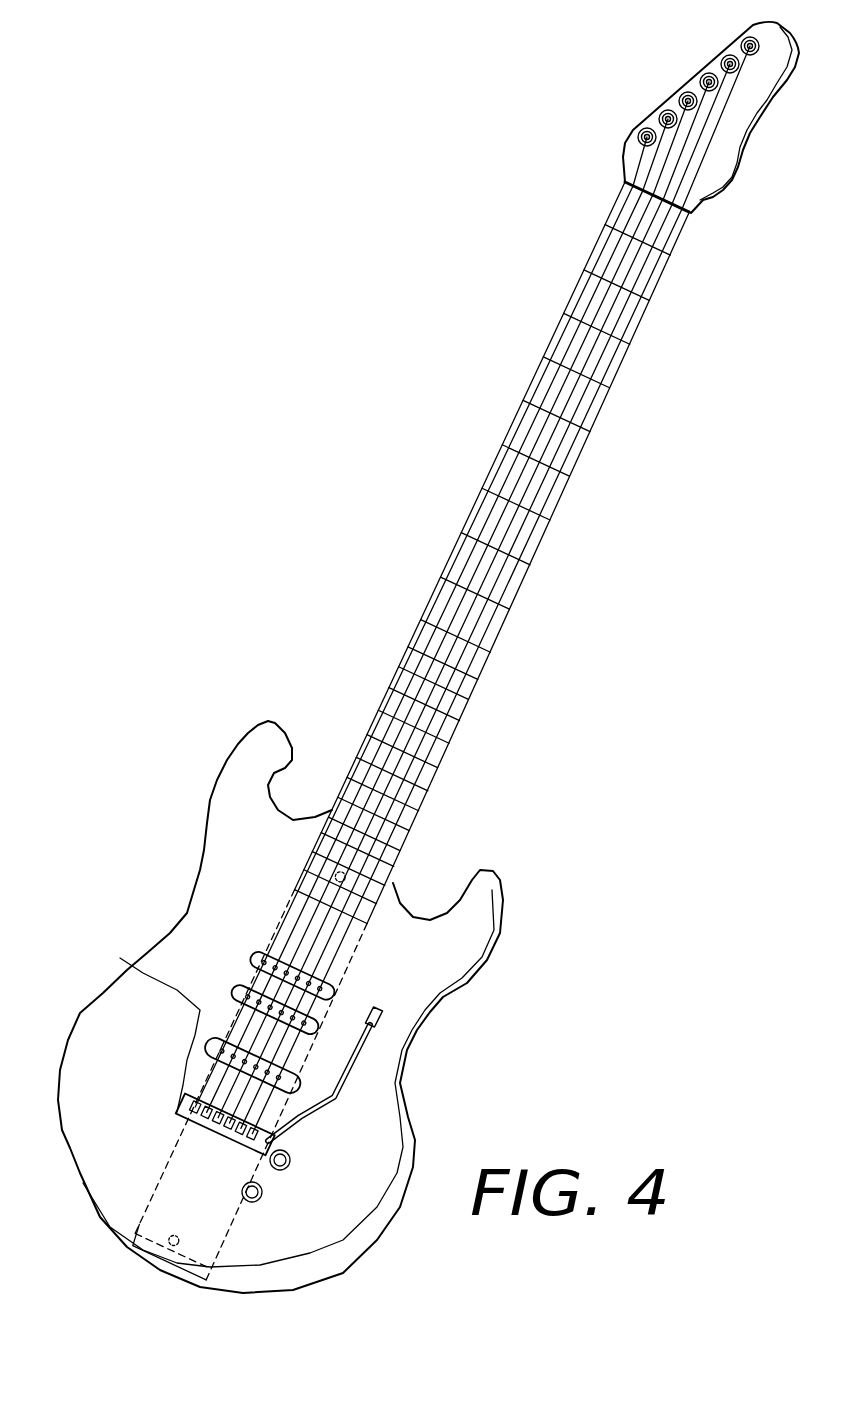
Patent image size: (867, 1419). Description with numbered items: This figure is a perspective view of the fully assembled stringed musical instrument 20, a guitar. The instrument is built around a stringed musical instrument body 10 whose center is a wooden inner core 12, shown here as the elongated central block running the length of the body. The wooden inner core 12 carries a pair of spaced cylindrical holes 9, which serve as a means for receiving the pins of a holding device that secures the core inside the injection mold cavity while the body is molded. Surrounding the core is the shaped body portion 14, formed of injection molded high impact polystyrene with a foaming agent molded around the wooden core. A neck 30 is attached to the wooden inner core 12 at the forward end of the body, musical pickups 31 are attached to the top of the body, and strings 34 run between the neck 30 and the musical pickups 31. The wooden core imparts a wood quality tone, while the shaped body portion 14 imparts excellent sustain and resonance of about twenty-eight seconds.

The stringed musical instrument 20 is at (292, 525).
The neck 30 is at (503, 425).
The strings 34 is at (490, 618).
The stringed musical instrument body 10 is at (190, 897).
The shaped body portion 14 is at (417, 1003).
The musical pickups 31 is at (203, 1017).
The wooden inner core 12 is at (160, 1173).
The spaced cylindrical holes 9 is at (179, 1230).